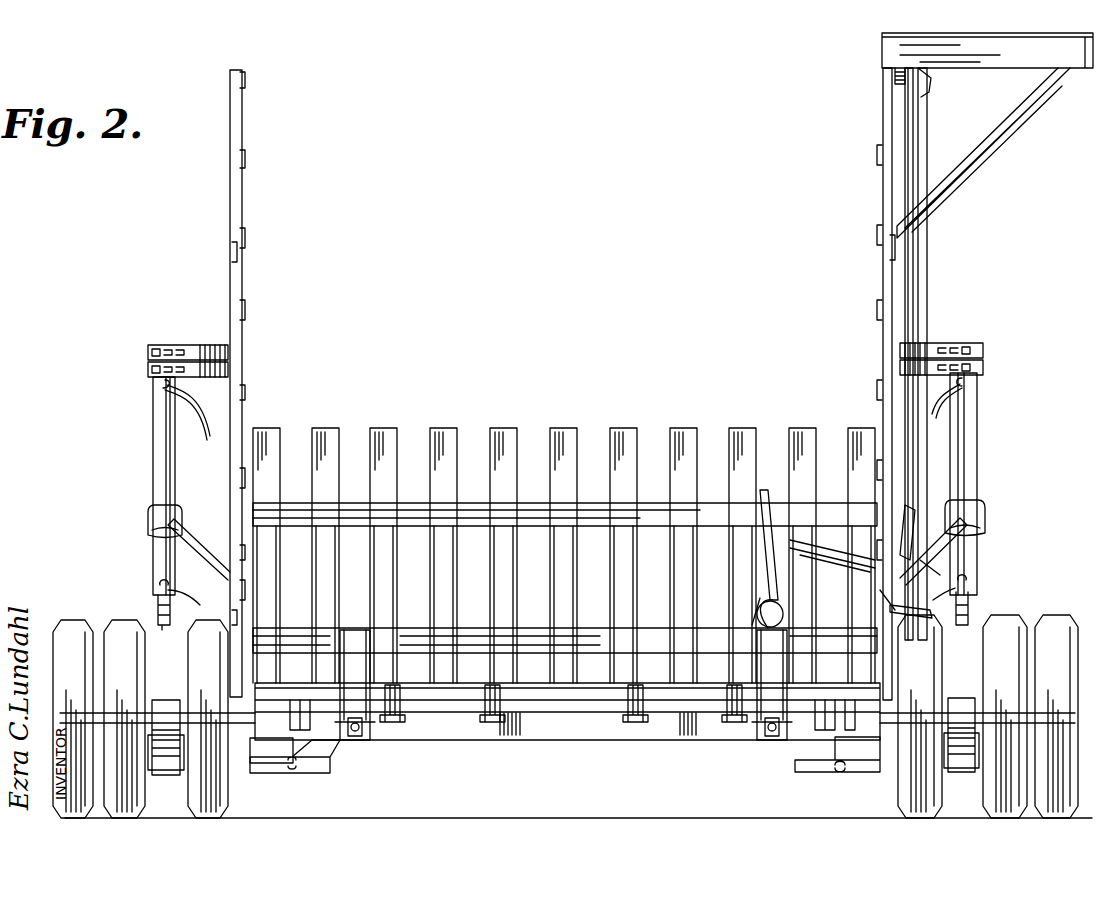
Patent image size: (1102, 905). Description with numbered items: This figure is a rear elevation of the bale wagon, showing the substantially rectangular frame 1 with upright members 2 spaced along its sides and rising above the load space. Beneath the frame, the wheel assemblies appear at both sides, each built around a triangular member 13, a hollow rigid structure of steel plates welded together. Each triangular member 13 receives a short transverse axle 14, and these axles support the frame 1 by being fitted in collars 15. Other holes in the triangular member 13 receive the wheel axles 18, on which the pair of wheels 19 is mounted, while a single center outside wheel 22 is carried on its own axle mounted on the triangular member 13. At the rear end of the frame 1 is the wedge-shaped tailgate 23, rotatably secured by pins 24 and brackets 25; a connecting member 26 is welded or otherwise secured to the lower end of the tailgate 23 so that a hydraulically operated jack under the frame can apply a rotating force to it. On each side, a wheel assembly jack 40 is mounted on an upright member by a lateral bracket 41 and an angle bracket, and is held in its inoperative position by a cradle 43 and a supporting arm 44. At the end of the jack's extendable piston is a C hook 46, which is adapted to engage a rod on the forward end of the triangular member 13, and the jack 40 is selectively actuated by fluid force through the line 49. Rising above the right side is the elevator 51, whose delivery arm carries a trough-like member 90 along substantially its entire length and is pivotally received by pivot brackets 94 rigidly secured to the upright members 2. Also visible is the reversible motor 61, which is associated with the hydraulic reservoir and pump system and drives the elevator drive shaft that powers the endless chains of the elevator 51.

The frame 1 is at (516, 730).
The upright members 2 is at (232, 80).
The triangular members 13 is at (166, 702).
The short transverse axles 14 is at (245, 762).
The collars 15 is at (312, 773).
The wheel axles 18 is at (100, 713).
The wheels 19 is at (193, 796).
The center outside wheel 22 is at (56, 635).
The tailgate 23 is at (564, 428).
The pins 24 is at (500, 718).
The brackets 25 is at (392, 722).
The connecting member 26 is at (365, 737).
The wheel assembly jack 40 is at (162, 455).
The lateral bracket 41 is at (208, 346).
The cradle 43 is at (151, 520).
The supporting arm 44 is at (195, 530).
The C hook 46 is at (160, 615).
The line 49 is at (175, 422).
The elevator 51 is at (938, 259).
The reversible motor 61 is at (900, 612).
The trough-like member 90 is at (927, 118).
The pivot brackets 94 is at (898, 80).